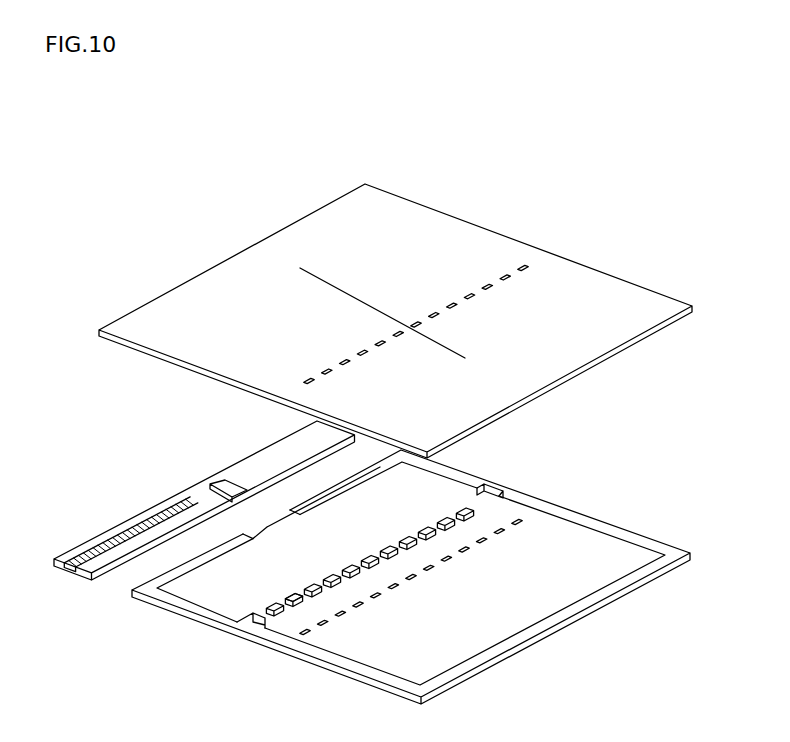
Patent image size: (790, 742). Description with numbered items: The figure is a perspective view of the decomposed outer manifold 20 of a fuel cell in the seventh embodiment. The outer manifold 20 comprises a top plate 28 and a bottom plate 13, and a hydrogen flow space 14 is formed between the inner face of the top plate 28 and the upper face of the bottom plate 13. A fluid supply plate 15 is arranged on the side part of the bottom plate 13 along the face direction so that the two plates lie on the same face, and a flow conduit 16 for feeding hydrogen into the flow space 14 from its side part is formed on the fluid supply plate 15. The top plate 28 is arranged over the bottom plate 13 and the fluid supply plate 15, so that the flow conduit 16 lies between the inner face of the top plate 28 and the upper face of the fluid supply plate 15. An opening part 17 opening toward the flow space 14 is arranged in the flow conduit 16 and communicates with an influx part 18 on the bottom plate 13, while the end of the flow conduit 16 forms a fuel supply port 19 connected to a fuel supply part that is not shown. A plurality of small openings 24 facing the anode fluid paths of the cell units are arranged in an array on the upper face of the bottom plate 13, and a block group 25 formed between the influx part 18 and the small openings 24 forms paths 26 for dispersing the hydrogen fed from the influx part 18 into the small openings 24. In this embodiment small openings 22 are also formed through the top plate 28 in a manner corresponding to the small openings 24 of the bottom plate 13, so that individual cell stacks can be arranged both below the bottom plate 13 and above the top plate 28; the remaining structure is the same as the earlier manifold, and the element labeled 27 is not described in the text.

The bottom plate 13 is at (655, 540).
The hydrogen flow space 14 is at (535, 455).
The fluid supply plate 15 is at (137, 513).
The flow conduit 16 is at (117, 543).
The opening part 17 is at (217, 500).
The influx part 18 is at (268, 528).
The fuel supply port 19 is at (68, 573).
The outer manifold 20 is at (614, 249).
The small openings 22 is at (520, 267).
The small openings 24 is at (513, 522).
The block group 25 is at (301, 569).
The paths 26 is at (448, 508).
The light receiving element 27 is at (300, 603).
The top plate 28 is at (443, 228).